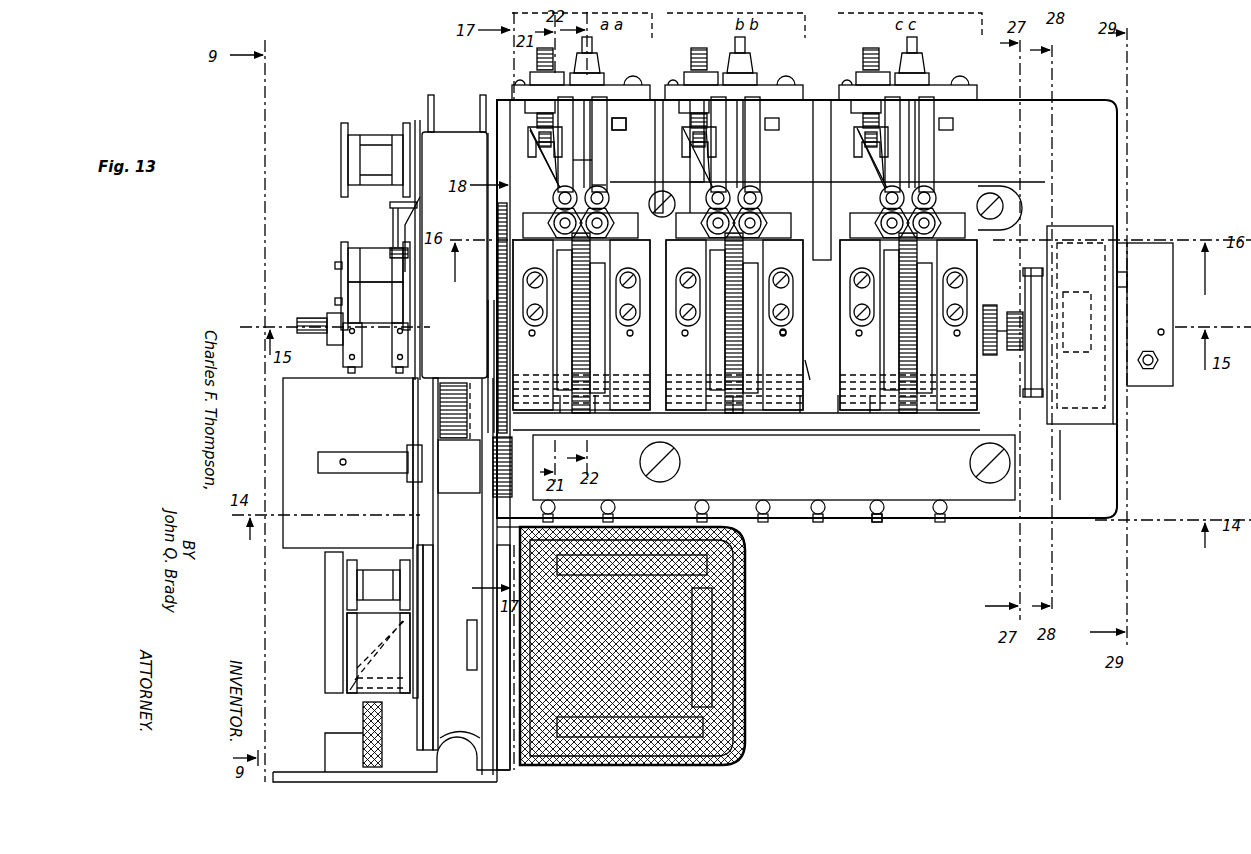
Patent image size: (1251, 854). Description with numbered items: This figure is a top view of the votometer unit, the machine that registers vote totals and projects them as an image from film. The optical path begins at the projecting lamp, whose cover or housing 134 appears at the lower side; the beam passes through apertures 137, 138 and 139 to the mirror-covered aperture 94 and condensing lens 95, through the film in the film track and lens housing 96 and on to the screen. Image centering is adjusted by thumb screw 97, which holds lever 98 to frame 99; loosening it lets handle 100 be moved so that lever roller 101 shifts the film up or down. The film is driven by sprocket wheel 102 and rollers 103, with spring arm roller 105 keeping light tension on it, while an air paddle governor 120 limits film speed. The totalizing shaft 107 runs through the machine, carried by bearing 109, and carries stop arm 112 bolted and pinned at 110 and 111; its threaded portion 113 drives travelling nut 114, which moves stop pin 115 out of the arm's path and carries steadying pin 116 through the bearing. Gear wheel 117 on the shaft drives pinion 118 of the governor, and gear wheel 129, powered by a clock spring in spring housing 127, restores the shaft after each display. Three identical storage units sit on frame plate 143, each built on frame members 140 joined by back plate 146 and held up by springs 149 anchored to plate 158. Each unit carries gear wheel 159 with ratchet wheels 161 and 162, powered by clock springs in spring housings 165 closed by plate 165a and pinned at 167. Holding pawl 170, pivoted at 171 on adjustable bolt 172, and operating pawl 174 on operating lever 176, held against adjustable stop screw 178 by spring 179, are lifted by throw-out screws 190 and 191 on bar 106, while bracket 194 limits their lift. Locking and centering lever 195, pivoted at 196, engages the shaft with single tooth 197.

The mirror-covered aperture 94 is at (345, 640).
The condensing lens 95 is at (348, 665).
The film track and lens housing 96 is at (330, 605).
The thumb screw 97 is at (362, 718).
The lever 98 is at (428, 605).
The frame 99 is at (481, 97).
The handle 100 is at (425, 640).
The lever roller 101 is at (375, 580).
The sprocket wheel 102 is at (345, 358).
The rollers 103 is at (345, 265).
The spring arm roller 105 is at (415, 125).
The bar 106 is at (806, 183).
The totalizing shaft 107 is at (340, 322).
The bearing 109 is at (1062, 226).
The bolt 110 is at (1150, 370).
The pin 111 is at (1165, 332).
The stop arm 112 is at (1150, 262).
The threaded portion 113 is at (1012, 352).
The travelling nut 114 is at (1030, 276).
The stop pin 115 is at (1125, 245).
The steadying pin 116 is at (1118, 422).
The gear wheel 117 is at (497, 370).
The pinion 118 is at (495, 480).
The governor 120 is at (287, 425).
The spring housing 127 is at (448, 418).
The gear wheel 129 is at (399, 466).
The projecting lamp housing 134 is at (745, 650).
The aperture 137 is at (497, 665).
The aperture 138 is at (472, 684).
The aperture 139 is at (470, 657).
The frame member 140 is at (882, 430).
The frame plate 143 is at (1105, 490).
The back plate 146 is at (935, 92).
The springs 149 is at (880, 522).
The plate 158 is at (755, 522).
The gear wheel 159 is at (733, 415).
The ratchet wheel 161 is at (560, 405).
The ratchet wheel 162 is at (598, 405).
The spring housing 165 is at (865, 415).
The plate 165a is at (805, 415).
The pin 167 is at (783, 335).
The holding pawl 170 is at (600, 246).
The pivot 171 is at (866, 165).
The adjustable bolt 172 is at (530, 120).
The operating pawl 174 is at (607, 168).
The operating lever 176 is at (605, 138).
The adjustable stop screw 178 is at (593, 56).
The spring 179 is at (746, 57).
The throw-out screw 190 is at (556, 198).
The throw-out screw 191 is at (600, 193).
The bracket 194 is at (970, 210).
The locking and centering lever 195 is at (840, 415).
The pivot 196 is at (822, 98).
The single tooth 197 is at (806, 372).